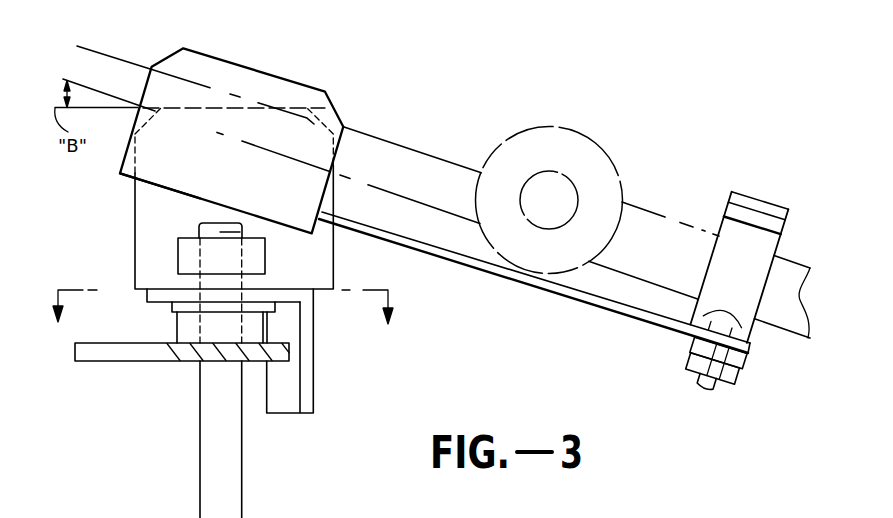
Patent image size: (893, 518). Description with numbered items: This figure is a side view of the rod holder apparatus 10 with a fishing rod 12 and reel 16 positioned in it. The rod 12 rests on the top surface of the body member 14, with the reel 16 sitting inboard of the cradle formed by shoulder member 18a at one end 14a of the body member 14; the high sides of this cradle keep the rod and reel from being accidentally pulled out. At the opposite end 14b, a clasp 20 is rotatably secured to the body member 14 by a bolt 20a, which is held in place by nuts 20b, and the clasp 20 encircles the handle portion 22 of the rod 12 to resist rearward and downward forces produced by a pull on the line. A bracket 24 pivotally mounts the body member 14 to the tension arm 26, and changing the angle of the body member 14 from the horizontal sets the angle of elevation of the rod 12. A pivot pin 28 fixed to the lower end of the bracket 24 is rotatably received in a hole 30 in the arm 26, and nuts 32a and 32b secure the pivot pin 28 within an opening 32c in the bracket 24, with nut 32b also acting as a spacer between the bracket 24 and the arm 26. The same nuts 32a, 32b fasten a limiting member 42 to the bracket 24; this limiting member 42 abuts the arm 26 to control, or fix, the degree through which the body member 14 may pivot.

The apparatus 10 is at (613, 112).
The fishing rod 12 is at (117, 66).
The body member 14 is at (563, 294).
The end of body member 14a is at (122, 173).
The end of body member 14b is at (749, 354).
The reel 16 is at (597, 175).
The shoulder member 18a is at (330, 103).
The clasp 20 is at (741, 198).
The bolt 20a is at (698, 378).
The nuts 20b is at (690, 354).
The handle portion 22 is at (773, 317).
The bracket 24 is at (333, 240).
The arm 26 is at (115, 358).
The pivot pin 28 is at (243, 487).
The hole 30 is at (190, 358).
The nut 32a is at (265, 255).
The nut 32b is at (178, 330).
The opening 32c is at (223, 307).
The limiting member 42 is at (313, 360).